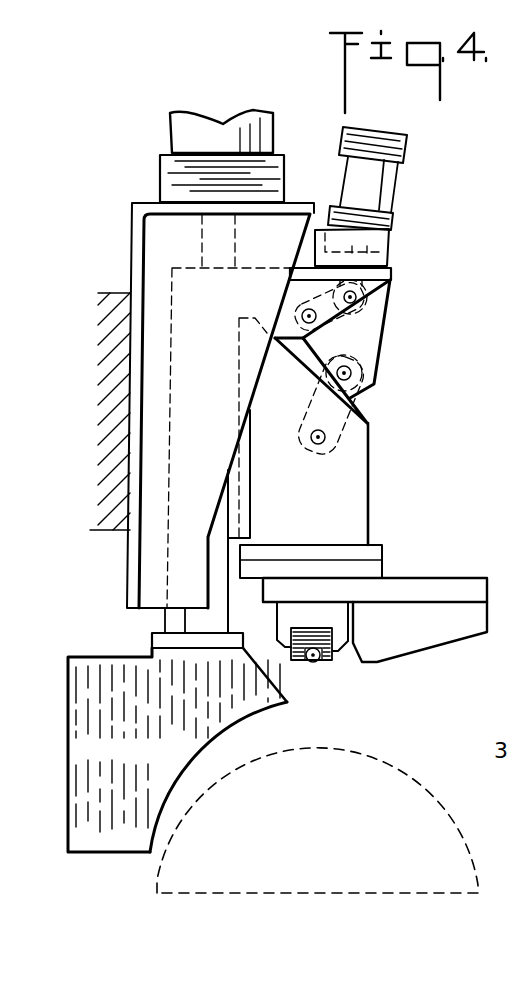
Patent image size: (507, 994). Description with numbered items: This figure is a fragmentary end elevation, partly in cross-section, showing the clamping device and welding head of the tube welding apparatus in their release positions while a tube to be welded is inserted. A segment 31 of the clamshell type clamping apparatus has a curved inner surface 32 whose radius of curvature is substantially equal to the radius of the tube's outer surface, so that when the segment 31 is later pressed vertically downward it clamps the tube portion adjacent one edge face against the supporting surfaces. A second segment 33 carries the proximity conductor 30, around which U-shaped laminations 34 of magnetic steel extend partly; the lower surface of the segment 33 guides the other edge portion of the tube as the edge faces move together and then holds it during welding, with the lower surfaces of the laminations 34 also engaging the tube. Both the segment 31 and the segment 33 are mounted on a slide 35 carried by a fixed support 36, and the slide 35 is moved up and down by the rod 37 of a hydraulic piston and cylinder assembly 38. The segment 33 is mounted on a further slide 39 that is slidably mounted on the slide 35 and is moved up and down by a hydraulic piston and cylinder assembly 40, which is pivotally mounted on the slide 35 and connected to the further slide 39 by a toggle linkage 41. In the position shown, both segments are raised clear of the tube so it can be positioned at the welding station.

The proximity conductor 30 is at (312, 662).
The segment of clamshell type clamping apparatus 31 is at (113, 845).
The curved inner surface 32 is at (214, 737).
The segment 33 is at (413, 642).
The U-shaped laminations 34 is at (327, 660).
The slide 35 is at (170, 619).
The fixed support 36 is at (152, 253).
The rod 37 is at (241, 243).
The hydraulic piston and cylinder assembly 38 is at (172, 125).
The further slide 39 is at (365, 496).
The hydraulic piston and cylinder assembly 40 is at (392, 190).
The toggle linkage 41 is at (378, 343).